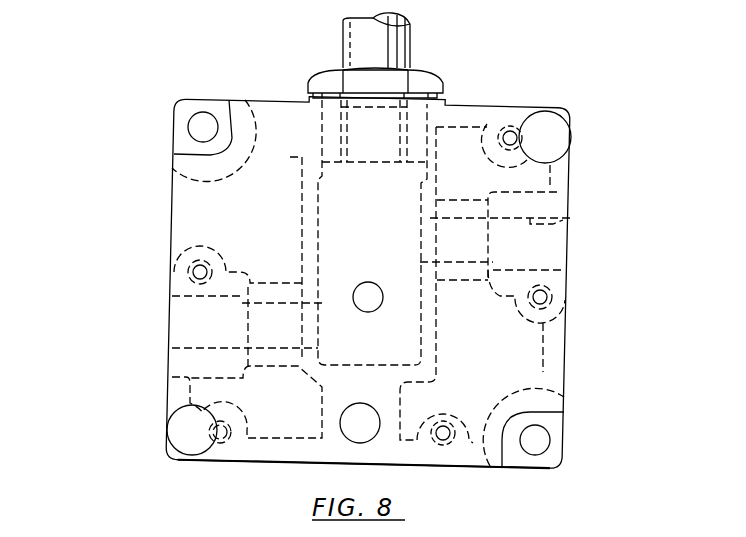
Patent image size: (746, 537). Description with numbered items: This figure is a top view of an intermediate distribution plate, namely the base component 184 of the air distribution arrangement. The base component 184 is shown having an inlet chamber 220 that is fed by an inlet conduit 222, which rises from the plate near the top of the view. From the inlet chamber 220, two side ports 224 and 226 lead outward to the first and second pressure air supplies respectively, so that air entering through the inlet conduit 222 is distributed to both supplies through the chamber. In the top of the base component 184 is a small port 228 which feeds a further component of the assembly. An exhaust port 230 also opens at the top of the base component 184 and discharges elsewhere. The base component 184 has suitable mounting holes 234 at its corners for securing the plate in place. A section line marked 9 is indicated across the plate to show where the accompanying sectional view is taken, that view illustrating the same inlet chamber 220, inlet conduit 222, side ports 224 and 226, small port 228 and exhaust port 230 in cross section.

The base component 184 is at (163, 398).
The inlet chamber 220 is at (316, 223).
The inlet conduit 222 is at (362, 45).
The side port 224 is at (185, 311).
The side port 226 is at (565, 219).
The small port 228 is at (370, 285).
The exhaust port 230 is at (361, 440).
The mounting holes 234 is at (196, 125).
The section line 9- 9 is at (627, 335).